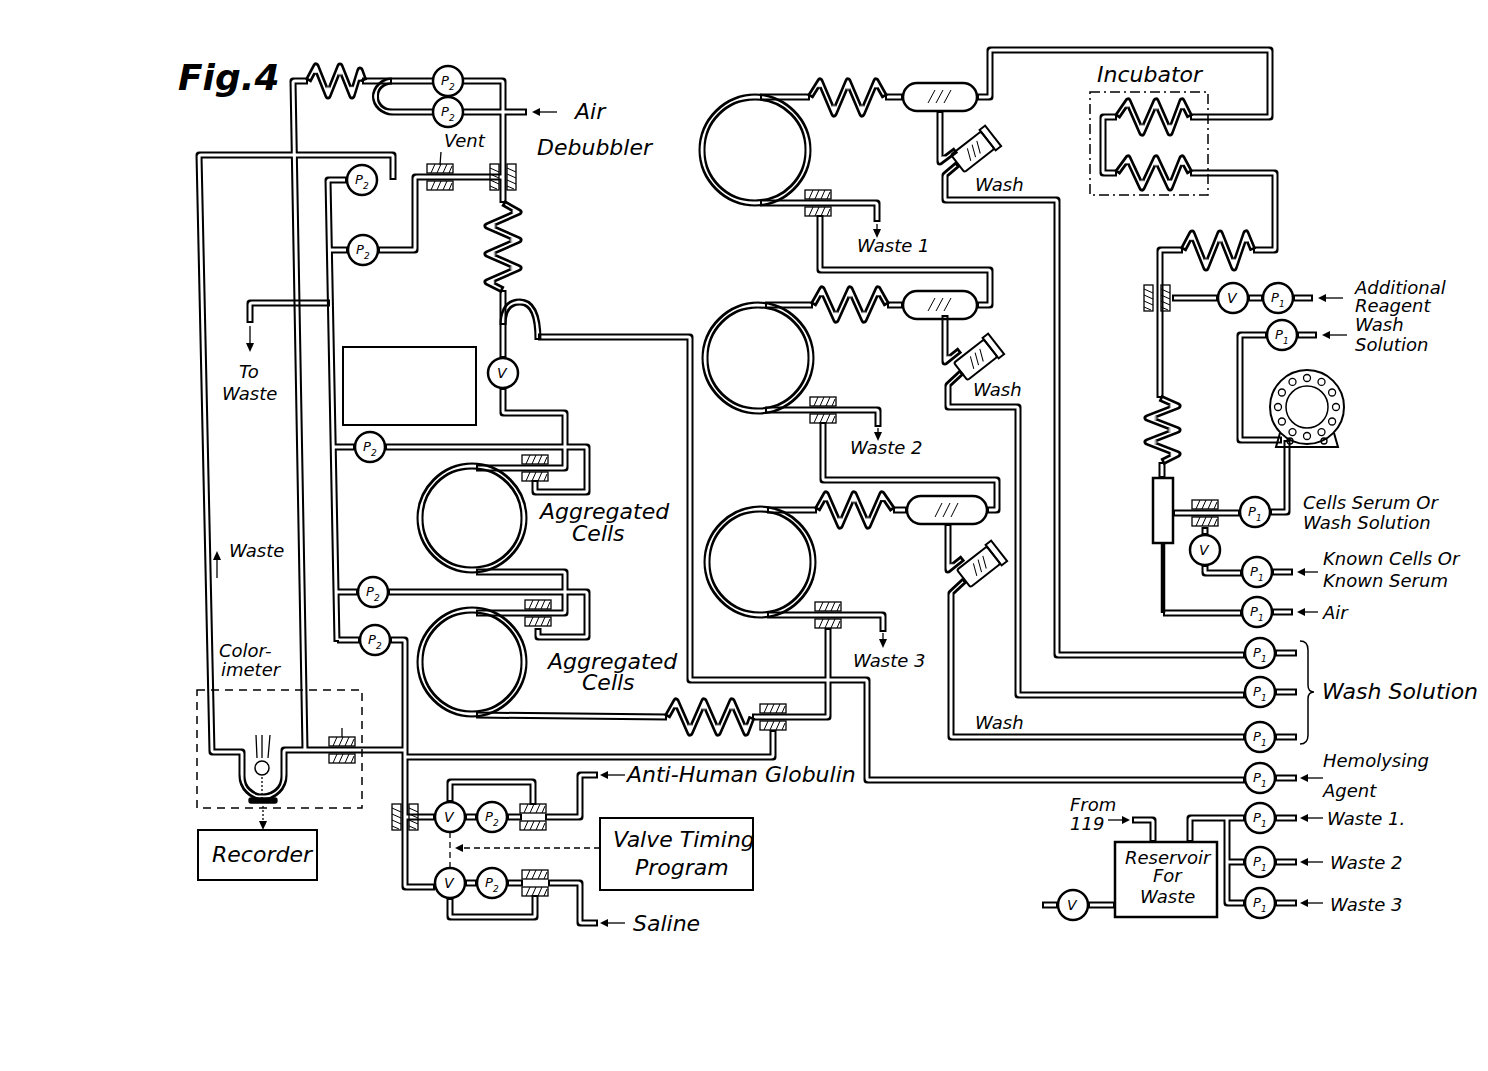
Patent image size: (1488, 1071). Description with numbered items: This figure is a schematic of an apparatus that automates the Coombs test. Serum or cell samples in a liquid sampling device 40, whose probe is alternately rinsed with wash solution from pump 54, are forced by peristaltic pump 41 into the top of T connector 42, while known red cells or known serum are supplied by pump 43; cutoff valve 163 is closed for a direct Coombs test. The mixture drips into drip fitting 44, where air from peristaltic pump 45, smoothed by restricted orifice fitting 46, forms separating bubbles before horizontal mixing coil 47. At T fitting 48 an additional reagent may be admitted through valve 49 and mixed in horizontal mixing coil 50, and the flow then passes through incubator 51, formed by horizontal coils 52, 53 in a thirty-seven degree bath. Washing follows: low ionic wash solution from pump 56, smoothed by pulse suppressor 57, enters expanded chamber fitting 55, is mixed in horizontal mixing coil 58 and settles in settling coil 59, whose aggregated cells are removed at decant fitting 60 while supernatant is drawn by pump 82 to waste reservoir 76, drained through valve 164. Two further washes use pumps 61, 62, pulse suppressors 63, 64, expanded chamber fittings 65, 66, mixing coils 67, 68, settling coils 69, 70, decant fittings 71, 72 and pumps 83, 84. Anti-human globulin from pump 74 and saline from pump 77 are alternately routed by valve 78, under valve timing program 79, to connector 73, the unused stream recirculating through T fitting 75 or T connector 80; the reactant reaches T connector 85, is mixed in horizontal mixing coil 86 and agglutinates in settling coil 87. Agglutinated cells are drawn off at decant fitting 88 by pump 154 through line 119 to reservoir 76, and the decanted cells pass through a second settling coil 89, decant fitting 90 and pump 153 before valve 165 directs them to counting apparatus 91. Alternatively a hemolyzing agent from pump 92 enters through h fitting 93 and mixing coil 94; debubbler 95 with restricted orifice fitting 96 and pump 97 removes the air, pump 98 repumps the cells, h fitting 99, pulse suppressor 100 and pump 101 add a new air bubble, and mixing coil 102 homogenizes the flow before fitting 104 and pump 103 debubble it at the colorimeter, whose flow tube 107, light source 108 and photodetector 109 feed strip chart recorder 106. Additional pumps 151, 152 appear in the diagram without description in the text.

The liquid sampling device 40 is at (1340, 392).
The peristaltic pump 41 is at (1262, 497).
The T connector 42 is at (1212, 500).
The pump 43 is at (1272, 548).
The drip fitting 44 is at (1153, 507).
The peristaltic pump 45 is at (1244, 604).
The pulse suppression restricted orifice fitting 46 is at (1159, 588).
The horizontal mixing coil 47 is at (1176, 428).
The T fitting 48 is at (1144, 290).
The valve 49 is at (1222, 290).
The horizontal mixing coil 50 is at (1248, 240).
The incubator 51 is at (1090, 160).
The horizontal coil 52 is at (1188, 168).
The horizontal coil 53 is at (1186, 111).
The pump 54 is at (1258, 344).
The expanded chamber fitting 55 is at (962, 82).
The pump 56 is at (1246, 645).
The pulse suppressor 57 is at (992, 135).
The horizontal mixing coil 58 is at (872, 80).
The settling coil 59 is at (716, 106).
The decant fitting 60 is at (828, 191).
The pump 61 is at (1246, 685).
The pump 62 is at (1246, 730).
The pulse suppressor 63 is at (980, 340).
The pulse suppressor 64 is at (982, 548).
The expanded chamber fitting 65 is at (910, 317).
The expanded chamber fitting 66 is at (916, 524).
The mixing coil 67 is at (812, 291).
The mixing coil 68 is at (816, 500).
The settling coil 69 is at (806, 368).
The settling coil 70 is at (808, 568).
The decant fitting 71 is at (836, 398).
The decant fitting 72 is at (836, 603).
The connector 73 is at (392, 805).
The pump 74 is at (497, 804).
The T fitting 75 is at (540, 805).
The waste reservoir 76 is at (1115, 848).
The pump 77 is at (500, 872).
The DPDT-like valve 78 is at (440, 804).
The valve timing program 79 is at (757, 818).
The T connector 80 is at (548, 874).
The pump 82 is at (1248, 812).
The pump 83 is at (1270, 852).
The pump 84 is at (1270, 893).
The T connector 85 is at (788, 727).
The horizontal mixing coil 86 is at (678, 706).
The settling coil 87 is at (438, 703).
The decant fitting 88 is at (524, 610).
The settling coil 89 is at (424, 490).
The decant fitting 90 is at (521, 464).
The counting apparatus 91 is at (460, 346).
The pump 92 is at (1247, 772).
The h fitting 93 is at (522, 305).
The horizontal mixing coil 94 is at (521, 239).
The debubbler 95 is at (518, 178).
The restricted orifice fitting 96 is at (440, 191).
The pump 97 is at (370, 264).
The pump 98 is at (464, 74).
The h fitting 99 is at (446, 66).
The pulse suppressor 100 is at (428, 110).
The pump 101 is at (462, 106).
The mixing coil 102 is at (360, 80).
The pump 103 is at (387, 628).
The fitting 104 is at (352, 740).
The strip chart recorder 106 is at (318, 838).
The flow tube 107 is at (288, 780).
The light source 108 is at (275, 741).
The photodetector 109 is at (248, 800).
The line 119 is at (278, 300).
The pump tube 151 is at (350, 196).
The additional reagent pump tube 152 is at (1284, 284).
The pump 153 is at (360, 464).
The pump 154 is at (380, 580).
The cutoff valve 163 is at (1190, 556).
The valve 164 is at (1063, 893).
The valve 165 is at (519, 372).